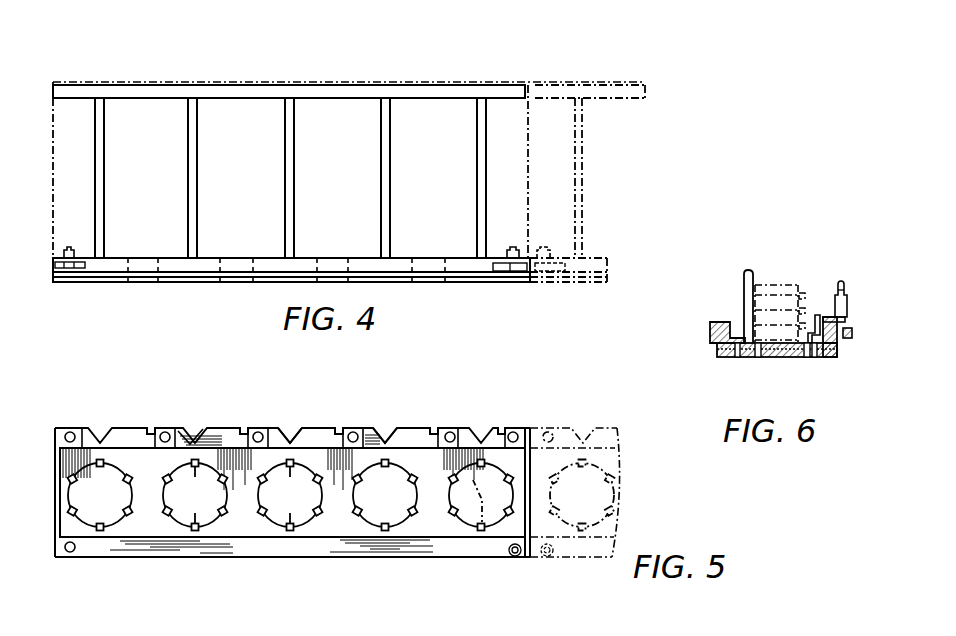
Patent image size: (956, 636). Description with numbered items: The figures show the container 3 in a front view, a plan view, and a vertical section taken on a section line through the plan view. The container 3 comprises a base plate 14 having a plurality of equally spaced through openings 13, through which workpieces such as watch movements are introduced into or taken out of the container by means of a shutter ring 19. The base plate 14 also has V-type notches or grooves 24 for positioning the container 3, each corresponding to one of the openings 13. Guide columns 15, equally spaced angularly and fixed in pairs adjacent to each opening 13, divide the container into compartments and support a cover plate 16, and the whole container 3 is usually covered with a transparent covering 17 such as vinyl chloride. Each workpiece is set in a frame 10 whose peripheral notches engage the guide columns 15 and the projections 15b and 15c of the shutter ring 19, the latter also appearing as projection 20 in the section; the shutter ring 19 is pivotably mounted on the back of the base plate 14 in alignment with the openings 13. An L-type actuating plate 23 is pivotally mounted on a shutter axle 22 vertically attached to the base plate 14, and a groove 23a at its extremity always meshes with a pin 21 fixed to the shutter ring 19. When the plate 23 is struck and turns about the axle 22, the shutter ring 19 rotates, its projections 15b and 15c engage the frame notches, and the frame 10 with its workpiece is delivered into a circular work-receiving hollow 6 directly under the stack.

In FIG. 4, the container 3 is at (446, 71).
In FIG. 5, the container 3 is at (522, 407).
In FIG. 5, the circular work-receiving hollow 6 is at (419, 392).
In FIG. 6, the frame 10 is at (776, 284).
In FIG. 4, the through opening 13 is at (208, 277).
In FIG. 5, the through opening 13 is at (208, 518).
In FIG. 6, the through opening 13 is at (773, 358).
In FIG. 4, the base plate 14 is at (364, 258).
In FIG. 5, the base plate 14 is at (328, 523).
In FIG. 6, the base plate 14 is at (712, 331).
In FIG. 4, the guide column 15 is at (287, 161).
In FIG. 5, the guide column 15 is at (101, 412).
In FIG. 6, the guide column 15 is at (745, 279).
In FIG. 5, the projection 15b is at (74, 479).
In FIG. 5, the projection 15c is at (123, 479).
In FIG. 4, the cover plate 16 is at (236, 90).
In FIG. 4, the transparent covering 17 is at (51, 125).
In FIG. 6, the shutter ring 19 is at (737, 358).
In FIG. 6, the projection 20 is at (758, 358).
In FIG. 6, the pin 21 is at (818, 314).
In FIG. 5, the shutter axle 22 is at (168, 432).
In FIG. 6, the shutter axle 22 is at (846, 290).
In FIG. 5, the L-type actuating plate 23 is at (192, 442).
In FIG. 6, the L-type actuating plate 23 is at (849, 323).
In FIG. 6, the groove 23a is at (830, 316).
In FIG. 5, the V-type notch 24 is at (299, 430).